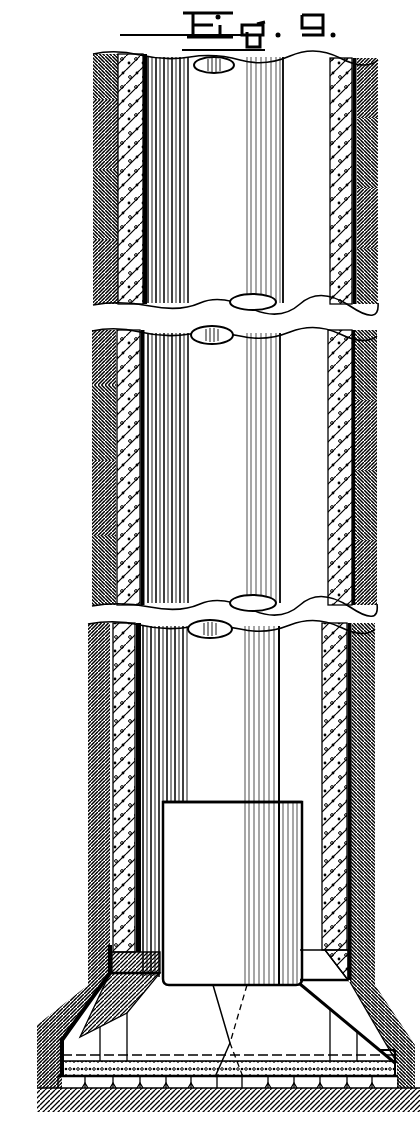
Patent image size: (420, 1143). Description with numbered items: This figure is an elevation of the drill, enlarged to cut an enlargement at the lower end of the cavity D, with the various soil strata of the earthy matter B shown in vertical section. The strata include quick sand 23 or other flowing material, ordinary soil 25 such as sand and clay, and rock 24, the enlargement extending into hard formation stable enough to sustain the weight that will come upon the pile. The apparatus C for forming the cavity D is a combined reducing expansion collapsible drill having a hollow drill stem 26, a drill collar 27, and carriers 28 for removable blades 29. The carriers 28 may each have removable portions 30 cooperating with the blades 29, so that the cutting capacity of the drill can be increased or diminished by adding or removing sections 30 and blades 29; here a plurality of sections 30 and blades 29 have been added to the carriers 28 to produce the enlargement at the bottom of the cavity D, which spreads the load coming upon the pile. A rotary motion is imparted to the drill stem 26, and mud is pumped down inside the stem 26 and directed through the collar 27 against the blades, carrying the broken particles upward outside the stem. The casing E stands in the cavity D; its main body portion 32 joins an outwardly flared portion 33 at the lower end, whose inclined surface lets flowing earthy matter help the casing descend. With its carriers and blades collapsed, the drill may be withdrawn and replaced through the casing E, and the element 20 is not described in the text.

The base plate segment 20 is at (165, 1031).
The quick sand 23 is at (97, 142).
The rock 24 is at (93, 453).
The ordinary soil 25 is at (97, 353).
The hollow drill stem 26 is at (252, 440).
The drill collar 27 is at (293, 802).
The carriers 28 is at (293, 1031).
The removable blades 29 is at (126, 1093).
The removable portions 30 is at (113, 1030).
The main body portion 32 is at (113, 853).
The outwardly flared portion 33 is at (108, 953).
The earthy matter B is at (88, 82).
The apparatus for forming a cavity C is at (232, 893).
The cavity D is at (312, 915).
The casing E is at (350, 243).